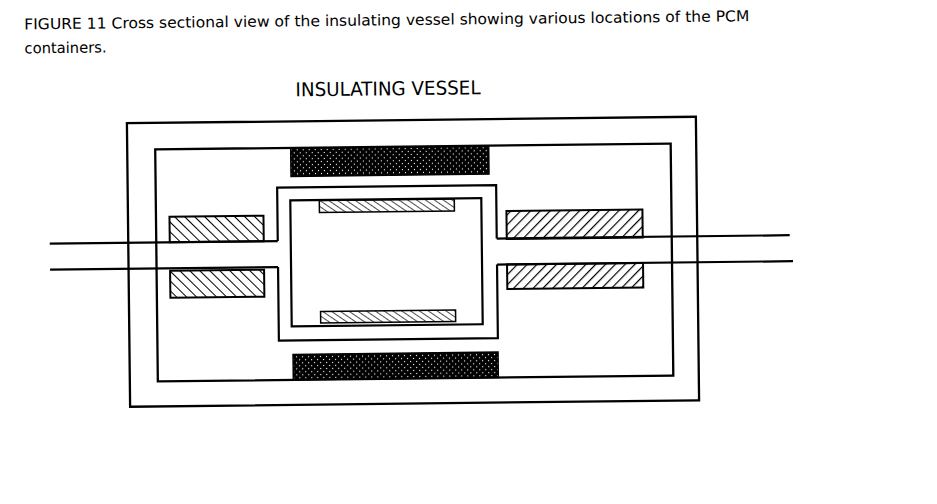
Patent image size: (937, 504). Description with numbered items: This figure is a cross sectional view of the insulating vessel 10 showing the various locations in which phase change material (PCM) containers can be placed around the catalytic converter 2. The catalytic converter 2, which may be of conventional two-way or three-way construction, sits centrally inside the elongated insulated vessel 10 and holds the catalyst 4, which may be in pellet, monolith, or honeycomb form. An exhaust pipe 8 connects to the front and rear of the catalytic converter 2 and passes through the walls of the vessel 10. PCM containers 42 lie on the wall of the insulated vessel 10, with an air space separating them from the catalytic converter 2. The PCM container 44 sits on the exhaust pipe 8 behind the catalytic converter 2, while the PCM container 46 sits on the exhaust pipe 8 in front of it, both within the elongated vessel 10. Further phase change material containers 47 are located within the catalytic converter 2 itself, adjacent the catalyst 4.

The insulating vessel 10 is at (145, 385).
The exhaust pipe 8 is at (90, 279).
The catalytic converter 2 is at (387, 262).
The catalyst 4 is at (386, 262).
The PCM container 42 is at (388, 378).
The PCM container 44 is at (550, 290).
The PCM container 46 is at (213, 295).
The phase change material containers 47 is at (335, 321).